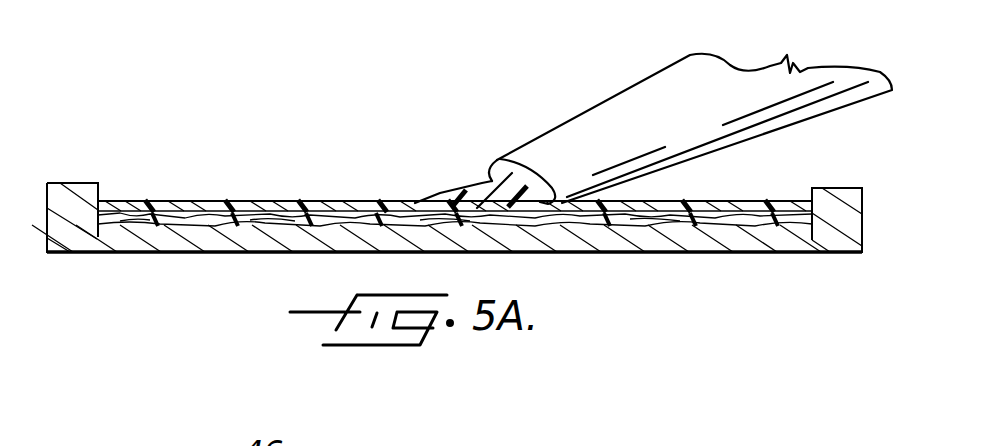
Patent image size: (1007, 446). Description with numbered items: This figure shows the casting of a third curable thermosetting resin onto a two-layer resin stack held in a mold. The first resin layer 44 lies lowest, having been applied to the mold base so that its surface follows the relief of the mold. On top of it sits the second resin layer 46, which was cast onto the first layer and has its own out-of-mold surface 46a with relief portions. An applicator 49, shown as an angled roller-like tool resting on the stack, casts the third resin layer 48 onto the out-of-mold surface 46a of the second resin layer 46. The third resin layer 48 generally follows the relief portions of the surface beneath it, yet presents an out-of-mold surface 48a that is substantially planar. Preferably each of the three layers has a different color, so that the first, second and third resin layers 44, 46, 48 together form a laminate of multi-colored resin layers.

The first resin layer 44 is at (738, 216).
The second resin layer 46 is at (401, 222).
The out-of-mold surface of the second resin layer 46a is at (132, 218).
The third resin layer 48 is at (317, 203).
The out-of-mold surface of the third resin layer 48a is at (243, 203).
The applicator 49 is at (800, 83).